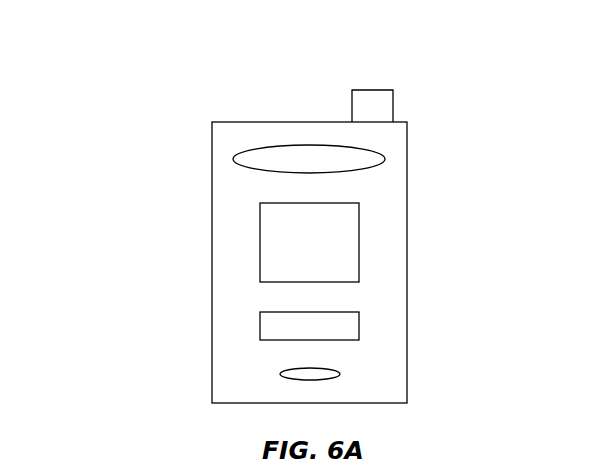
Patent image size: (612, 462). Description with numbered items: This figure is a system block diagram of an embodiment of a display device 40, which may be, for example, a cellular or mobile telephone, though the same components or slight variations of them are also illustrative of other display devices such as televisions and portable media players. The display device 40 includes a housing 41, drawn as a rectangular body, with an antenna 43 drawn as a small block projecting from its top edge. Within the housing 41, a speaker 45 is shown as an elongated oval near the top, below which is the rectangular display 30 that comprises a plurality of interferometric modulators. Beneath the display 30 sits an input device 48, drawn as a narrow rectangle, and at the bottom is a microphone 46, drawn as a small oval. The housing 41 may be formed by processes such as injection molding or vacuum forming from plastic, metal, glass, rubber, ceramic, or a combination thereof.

The display device 40 is at (172, 50).
The housing 41 is at (237, 122).
The antenna 43 is at (377, 90).
The speaker 45 is at (385, 159).
The display 30 is at (359, 234).
The input device 48 is at (359, 326).
The microphone 46 is at (340, 374).